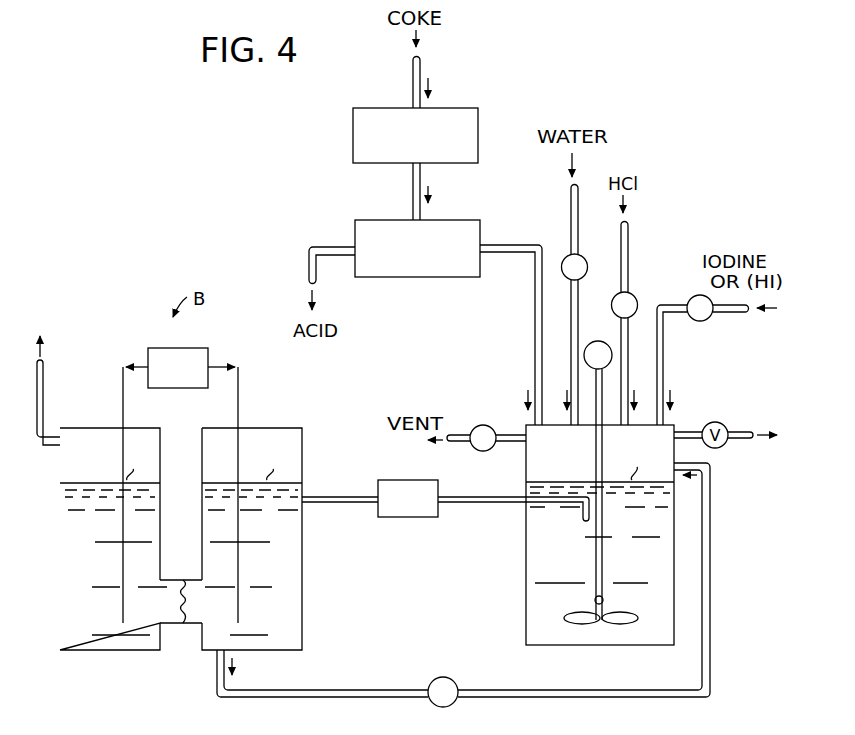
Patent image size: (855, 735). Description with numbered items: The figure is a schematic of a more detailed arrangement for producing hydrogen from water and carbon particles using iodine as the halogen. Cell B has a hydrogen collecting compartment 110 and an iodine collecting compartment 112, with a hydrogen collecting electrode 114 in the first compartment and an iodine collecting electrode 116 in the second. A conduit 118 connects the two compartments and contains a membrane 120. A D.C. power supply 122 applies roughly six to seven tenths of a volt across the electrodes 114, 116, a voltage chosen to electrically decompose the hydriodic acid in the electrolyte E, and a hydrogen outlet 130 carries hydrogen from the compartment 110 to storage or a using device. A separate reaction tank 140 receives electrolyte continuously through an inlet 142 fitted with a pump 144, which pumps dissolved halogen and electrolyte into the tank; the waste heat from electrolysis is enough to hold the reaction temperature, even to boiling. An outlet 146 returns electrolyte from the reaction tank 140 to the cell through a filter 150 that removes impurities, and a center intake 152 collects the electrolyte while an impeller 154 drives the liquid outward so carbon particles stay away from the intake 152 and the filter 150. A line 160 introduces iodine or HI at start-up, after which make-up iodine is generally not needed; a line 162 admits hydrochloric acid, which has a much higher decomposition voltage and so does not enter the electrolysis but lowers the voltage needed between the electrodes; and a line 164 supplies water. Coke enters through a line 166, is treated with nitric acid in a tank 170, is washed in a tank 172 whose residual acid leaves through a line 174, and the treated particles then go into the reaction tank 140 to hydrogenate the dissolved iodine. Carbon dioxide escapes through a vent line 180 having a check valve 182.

The hydrogen collecting compartment 110 is at (97, 428).
The iodine collecting compartment 112 is at (218, 428).
The hydrogen collecting electrode 114 is at (125, 552).
The iodine collecting electrode 116 is at (242, 548).
The conduit 118 is at (183, 625).
The membrane 120 is at (187, 607).
The D.C. power supply 122 is at (182, 347).
The hydrogen outlet 130 is at (50, 390).
The reaction tank 140 is at (526, 572).
The inlet 142 is at (711, 497).
The pump 144 is at (453, 680).
The outlet 146 is at (470, 495).
The filter 150 is at (403, 517).
The center intake 152 is at (582, 513).
The impeller 154 is at (623, 600).
The line 160 is at (664, 376).
The line 162 is at (628, 273).
The line 164 is at (571, 201).
The line 166 is at (421, 72).
The tank 170 is at (478, 121).
The tank 172 is at (367, 220).
The line 174 is at (322, 247).
The line 180 is at (508, 433).
The check valve 182 is at (483, 425).